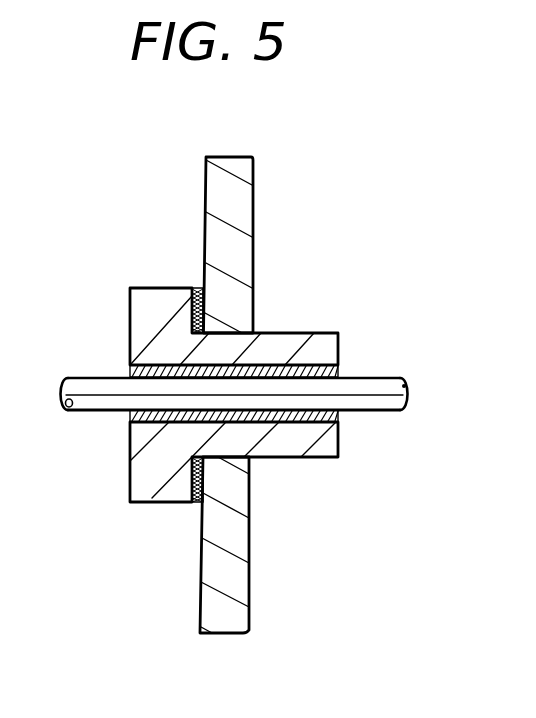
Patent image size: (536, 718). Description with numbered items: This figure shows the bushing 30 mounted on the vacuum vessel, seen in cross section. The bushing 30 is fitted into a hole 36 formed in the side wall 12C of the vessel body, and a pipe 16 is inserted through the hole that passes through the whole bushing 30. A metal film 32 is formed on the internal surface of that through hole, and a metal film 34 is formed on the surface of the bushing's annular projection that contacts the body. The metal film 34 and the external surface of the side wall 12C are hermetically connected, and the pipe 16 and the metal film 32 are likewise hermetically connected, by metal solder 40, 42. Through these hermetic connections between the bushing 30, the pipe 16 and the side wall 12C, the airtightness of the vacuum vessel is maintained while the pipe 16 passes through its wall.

The side wall 12C is at (206, 199).
The pipe 16 is at (375, 378).
The bushing 30 is at (320, 333).
The metal film 32 is at (167, 423).
The metal film 34 is at (197, 307).
The hole 36 is at (238, 455).
The metal solder 40 is at (197, 480).
The metal solder 42 is at (312, 410).